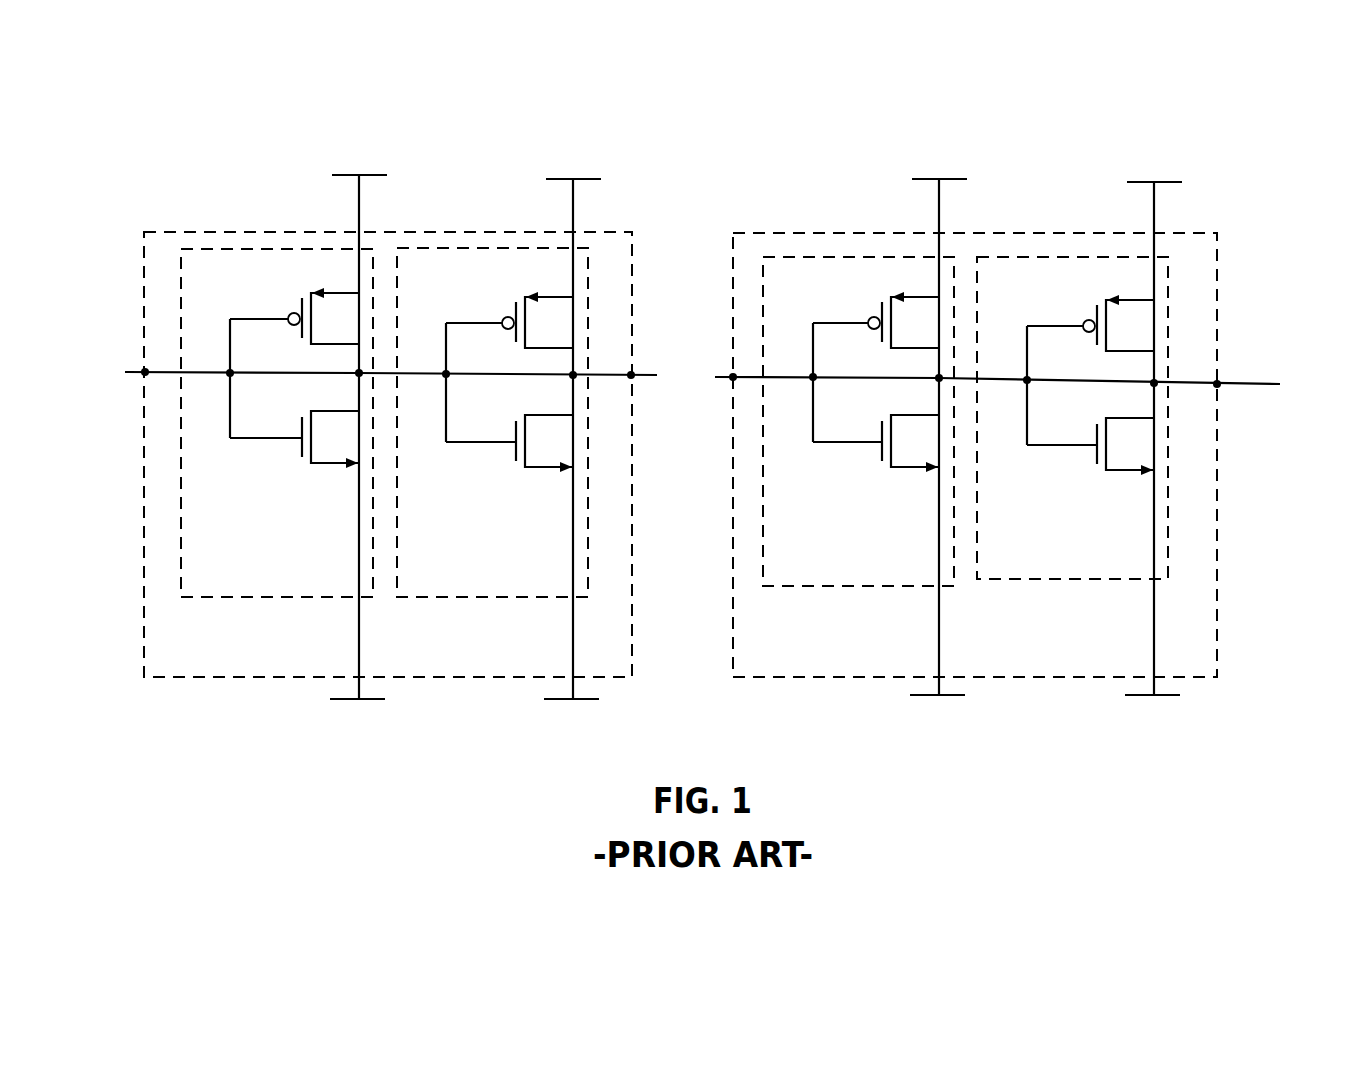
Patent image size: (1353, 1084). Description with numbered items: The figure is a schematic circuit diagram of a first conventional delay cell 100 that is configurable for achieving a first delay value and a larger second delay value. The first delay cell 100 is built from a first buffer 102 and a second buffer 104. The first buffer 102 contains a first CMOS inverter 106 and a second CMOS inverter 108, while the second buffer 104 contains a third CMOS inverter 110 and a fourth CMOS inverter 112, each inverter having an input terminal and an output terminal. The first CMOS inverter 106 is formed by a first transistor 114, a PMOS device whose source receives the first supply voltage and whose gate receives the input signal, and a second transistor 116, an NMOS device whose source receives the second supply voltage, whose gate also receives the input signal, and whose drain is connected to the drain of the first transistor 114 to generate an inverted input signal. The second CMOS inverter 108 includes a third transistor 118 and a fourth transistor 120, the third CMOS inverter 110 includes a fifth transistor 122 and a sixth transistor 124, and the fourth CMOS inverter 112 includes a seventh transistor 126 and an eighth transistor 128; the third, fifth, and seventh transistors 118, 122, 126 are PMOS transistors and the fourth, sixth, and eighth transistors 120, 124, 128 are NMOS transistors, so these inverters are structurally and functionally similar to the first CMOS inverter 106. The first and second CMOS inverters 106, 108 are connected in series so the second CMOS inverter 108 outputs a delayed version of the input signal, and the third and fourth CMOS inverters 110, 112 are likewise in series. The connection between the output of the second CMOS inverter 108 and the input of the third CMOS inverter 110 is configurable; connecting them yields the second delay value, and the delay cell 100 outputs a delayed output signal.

The first conventional delay cell 100 is at (207, 756).
The first buffer 102 is at (633, 243).
The second buffer 104 is at (1219, 250).
The first CMOS inverter 106 is at (208, 598).
The second CMOS inverter 108 is at (425, 597).
The third CMOS inverter 110 is at (793, 586).
The fourth CMOS inverter 112 is at (998, 582).
The first transistor 114 is at (316, 293).
The second transistor 116 is at (352, 466).
The third transistor 118 is at (530, 297).
The fourth transistor 120 is at (567, 472).
The fifth transistor 122 is at (896, 298).
The sixth transistor 124 is at (930, 470).
The seventh transistor 126 is at (1111, 300).
The eighth transistor 128 is at (1145, 473).